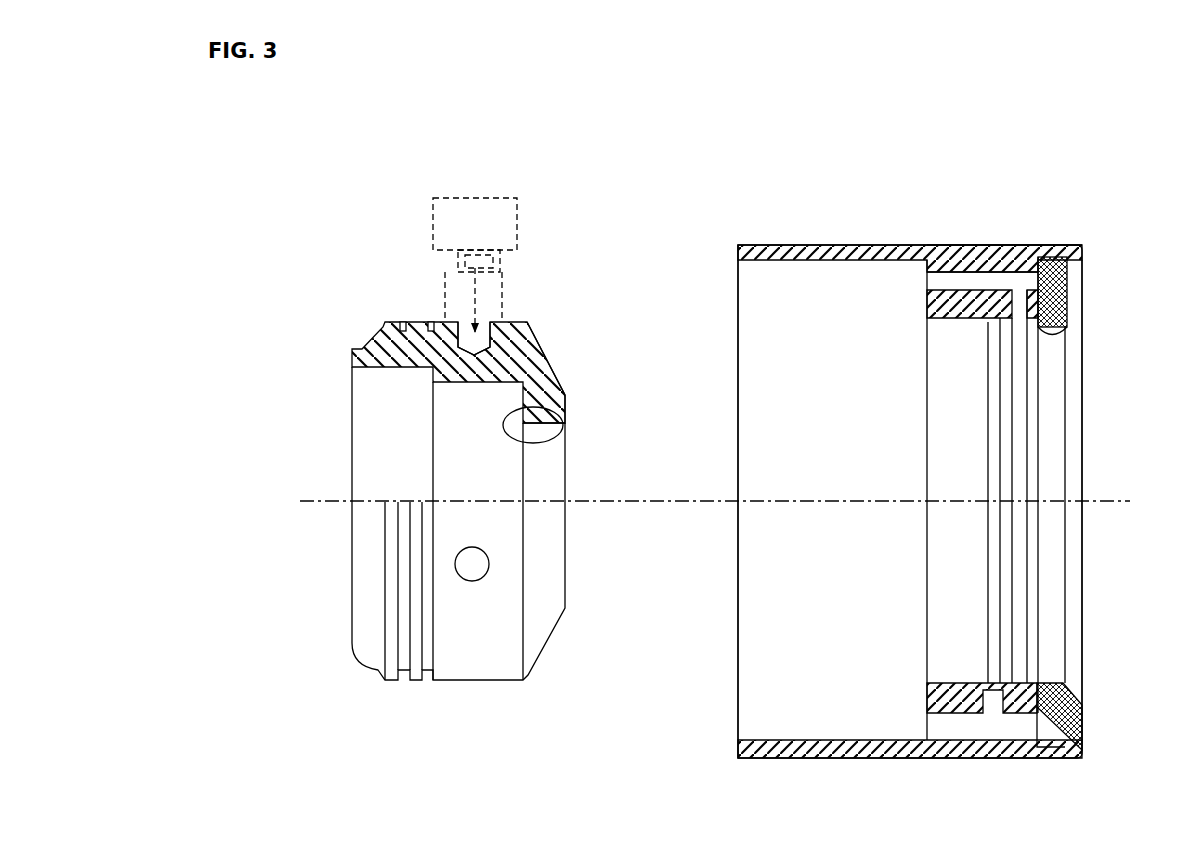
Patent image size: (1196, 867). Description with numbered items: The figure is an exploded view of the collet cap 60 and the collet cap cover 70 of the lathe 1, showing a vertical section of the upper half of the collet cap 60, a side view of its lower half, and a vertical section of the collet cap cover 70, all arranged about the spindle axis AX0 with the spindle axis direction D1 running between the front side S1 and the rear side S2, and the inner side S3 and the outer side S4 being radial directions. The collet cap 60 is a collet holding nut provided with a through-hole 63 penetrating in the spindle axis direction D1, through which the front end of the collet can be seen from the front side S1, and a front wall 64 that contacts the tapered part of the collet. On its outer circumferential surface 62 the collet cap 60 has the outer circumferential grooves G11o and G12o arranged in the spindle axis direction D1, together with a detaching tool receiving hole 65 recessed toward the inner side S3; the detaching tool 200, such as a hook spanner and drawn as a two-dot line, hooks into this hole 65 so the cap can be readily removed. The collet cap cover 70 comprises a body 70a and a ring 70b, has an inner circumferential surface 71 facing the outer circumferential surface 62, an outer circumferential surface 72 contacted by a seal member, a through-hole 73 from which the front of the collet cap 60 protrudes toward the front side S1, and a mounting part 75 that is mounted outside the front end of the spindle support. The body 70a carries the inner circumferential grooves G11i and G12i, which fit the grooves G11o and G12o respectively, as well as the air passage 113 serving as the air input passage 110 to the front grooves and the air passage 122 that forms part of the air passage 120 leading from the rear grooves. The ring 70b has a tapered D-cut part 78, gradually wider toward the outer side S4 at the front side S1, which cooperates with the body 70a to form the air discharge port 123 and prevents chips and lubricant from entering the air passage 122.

The lathe 1 is at (286, 186).
The collet cap 60 is at (348, 352).
The outer circumferential surface 62 is at (513, 321).
The through-hole 63 is at (555, 437).
The front wall 64 is at (560, 445).
The detaching tool receiving hole 65 is at (466, 329).
The outer circumferential groove G11o is at (429, 322).
The outer circumferential groove G12o is at (402, 324).
The detaching tool 200 is at (518, 222).
The spindle axis AX0 is at (326, 496).
The collet cap cover 70 is at (960, 504).
The body 70a is at (1006, 245).
The ring 70b is at (1072, 289).
The inner circumferential surface 71 is at (1062, 335).
The outer circumferential surface 72 is at (897, 244).
The through-hole 73 is at (1070, 388).
The mounting part 75 is at (762, 244).
The D-cut part 78 is at (1060, 740).
The air input passage 110 is at (982, 448).
The air passage 113 is at (977, 280).
The air passage 120 is at (982, 754).
The air passage 122 is at (990, 728).
The air discharge port 123 is at (1086, 746).
The inner circumferential groove G11i is at (1025, 468).
The inner circumferential groove G12i is at (1000, 417).
The front side S1 is at (614, 802).
The rear side S2 is at (594, 800).
The inner side S3 is at (689, 503).
The outer side S4 is at (688, 378).
The spindle axis direction D1 is at (536, 829).